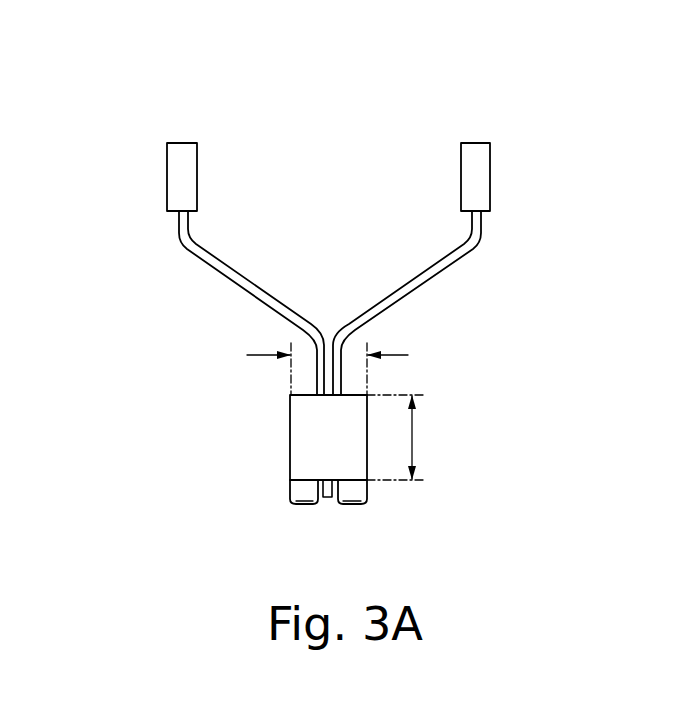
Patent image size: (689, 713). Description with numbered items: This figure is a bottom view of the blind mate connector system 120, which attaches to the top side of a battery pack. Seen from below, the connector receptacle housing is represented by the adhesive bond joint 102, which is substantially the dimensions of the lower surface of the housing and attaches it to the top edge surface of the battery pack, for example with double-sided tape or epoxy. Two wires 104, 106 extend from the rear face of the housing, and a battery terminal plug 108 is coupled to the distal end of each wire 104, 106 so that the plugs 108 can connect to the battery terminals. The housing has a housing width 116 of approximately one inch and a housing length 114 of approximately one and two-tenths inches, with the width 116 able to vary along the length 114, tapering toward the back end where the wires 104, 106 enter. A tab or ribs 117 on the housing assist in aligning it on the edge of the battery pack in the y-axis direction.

The blind mate connector system 120 is at (132, 107).
The battery terminal plug 108 is at (197, 142).
The wire 106 is at (182, 245).
The wire 104 is at (483, 233).
The adhesive bond joint 102 is at (347, 462).
The ribs 117 is at (330, 495).
The housing length 114 is at (412, 440).
The housing width 116 is at (262, 352).